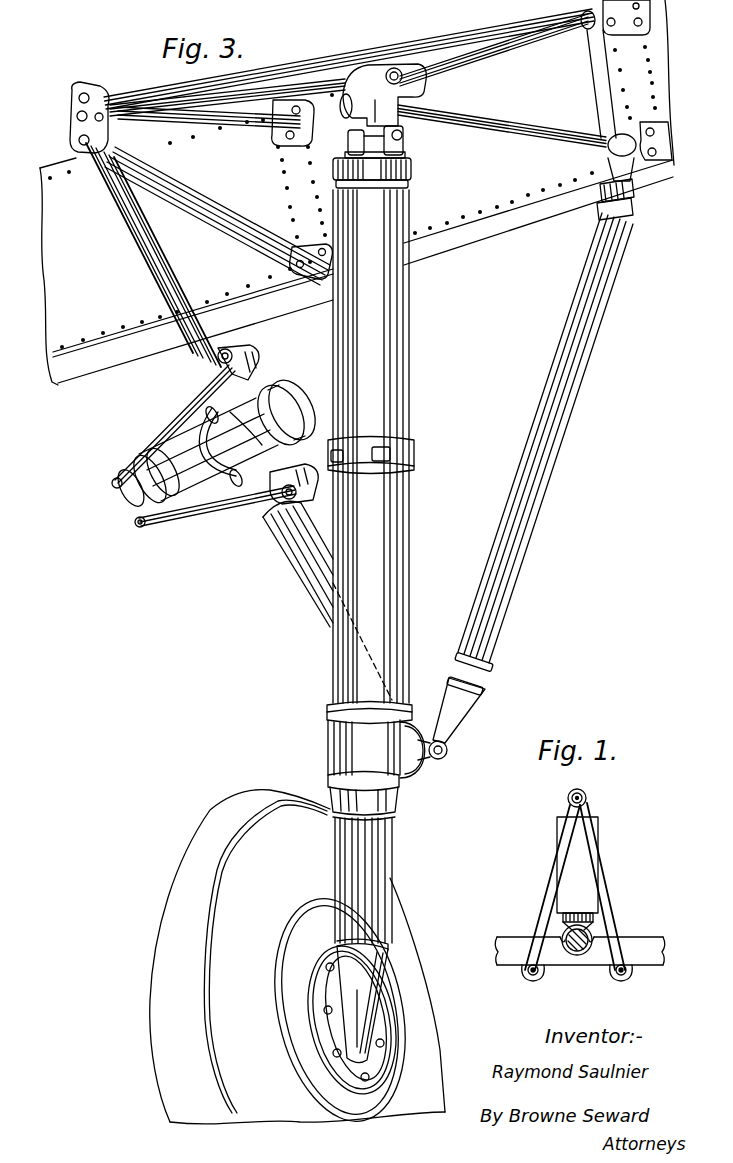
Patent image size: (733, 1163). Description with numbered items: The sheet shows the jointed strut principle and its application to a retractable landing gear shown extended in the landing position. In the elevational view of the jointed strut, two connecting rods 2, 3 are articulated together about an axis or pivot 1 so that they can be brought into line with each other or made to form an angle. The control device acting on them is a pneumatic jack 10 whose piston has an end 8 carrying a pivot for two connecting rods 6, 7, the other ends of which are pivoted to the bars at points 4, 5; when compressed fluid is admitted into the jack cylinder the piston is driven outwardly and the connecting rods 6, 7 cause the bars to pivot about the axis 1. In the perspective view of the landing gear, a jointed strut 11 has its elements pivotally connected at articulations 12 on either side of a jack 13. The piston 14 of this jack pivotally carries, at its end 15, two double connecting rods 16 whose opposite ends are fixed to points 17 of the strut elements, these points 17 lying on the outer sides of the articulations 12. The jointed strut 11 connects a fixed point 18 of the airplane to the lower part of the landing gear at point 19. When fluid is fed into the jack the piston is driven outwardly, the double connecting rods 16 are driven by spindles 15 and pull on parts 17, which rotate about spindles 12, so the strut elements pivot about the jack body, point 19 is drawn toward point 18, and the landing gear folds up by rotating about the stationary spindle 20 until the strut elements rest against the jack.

In FIG. 1, the axis or pivot 1 is at (577, 955).
In FIG. 1, the connecting rod 2 is at (508, 953).
In FIG. 1, the connecting rod 3 is at (642, 942).
In FIG. 1, the pivot point 4 is at (534, 976).
In FIG. 1, the pivot point 5 is at (620, 976).
In FIG. 1, the connecting rod 6 is at (550, 895).
In FIG. 1, the connecting rod 7 is at (607, 908).
In FIG. 1, the piston end 8 is at (586, 798).
In FIG. 1, the pneumatic jack 10 is at (577, 873).
In FIG. 3, the jointed strut 11 is at (300, 552).
In FIG. 3, the articulation 12 is at (207, 440).
In FIG. 3, the jack 13 is at (247, 427).
In FIG. 3, the piston 14 is at (138, 527).
In FIG. 3, the piston end or spindle 15 is at (117, 486).
In FIG. 3, the double connecting rod 16 is at (156, 432).
In FIG. 3, the connecting point 17 is at (228, 358).
In FIG. 3, the fixed point 18 is at (78, 108).
In FIG. 3, the lower connecting point 19 is at (424, 760).
In FIG. 3, the stationary spindle 20 is at (468, 122).